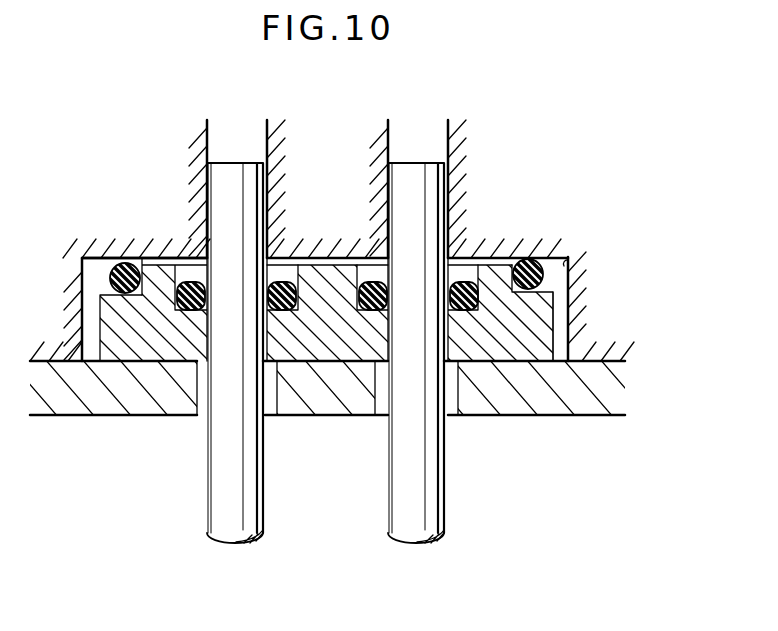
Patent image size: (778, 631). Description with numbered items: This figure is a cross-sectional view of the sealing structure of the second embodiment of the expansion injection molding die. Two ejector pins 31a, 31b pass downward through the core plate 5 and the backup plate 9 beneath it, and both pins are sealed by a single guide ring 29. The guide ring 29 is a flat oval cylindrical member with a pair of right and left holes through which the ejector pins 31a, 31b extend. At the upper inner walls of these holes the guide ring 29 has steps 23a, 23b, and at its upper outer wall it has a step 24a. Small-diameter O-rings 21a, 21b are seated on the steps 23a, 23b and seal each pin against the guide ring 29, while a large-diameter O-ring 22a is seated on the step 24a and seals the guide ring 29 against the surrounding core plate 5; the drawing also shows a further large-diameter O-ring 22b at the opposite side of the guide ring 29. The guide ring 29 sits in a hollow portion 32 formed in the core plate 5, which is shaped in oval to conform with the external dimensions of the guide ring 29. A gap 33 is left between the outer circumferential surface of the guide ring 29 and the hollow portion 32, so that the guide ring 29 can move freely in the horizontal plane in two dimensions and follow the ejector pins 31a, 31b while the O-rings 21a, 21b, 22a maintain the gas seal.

The core plate 5 is at (539, 205).
The backup plate 9 is at (573, 398).
The small-diameter O-ring 21a is at (287, 268).
The small-diameter O-ring 21b is at (465, 275).
The large-diameter O-ring 22a is at (116, 263).
The O-ring 22b is at (527, 273).
The step 23a is at (183, 257).
The step 23b is at (365, 257).
The step 24a is at (91, 313).
The guide ring 29 is at (556, 312).
The ejector pin 31a is at (225, 525).
The ejector pin 31b is at (412, 520).
The hollow portion 32 is at (568, 255).
The gap 33 is at (83, 246).